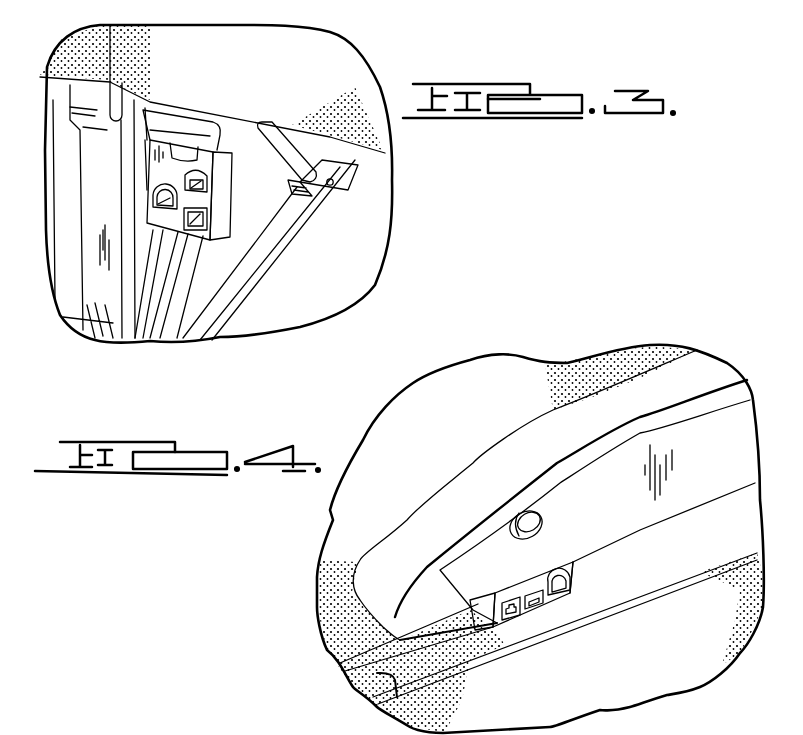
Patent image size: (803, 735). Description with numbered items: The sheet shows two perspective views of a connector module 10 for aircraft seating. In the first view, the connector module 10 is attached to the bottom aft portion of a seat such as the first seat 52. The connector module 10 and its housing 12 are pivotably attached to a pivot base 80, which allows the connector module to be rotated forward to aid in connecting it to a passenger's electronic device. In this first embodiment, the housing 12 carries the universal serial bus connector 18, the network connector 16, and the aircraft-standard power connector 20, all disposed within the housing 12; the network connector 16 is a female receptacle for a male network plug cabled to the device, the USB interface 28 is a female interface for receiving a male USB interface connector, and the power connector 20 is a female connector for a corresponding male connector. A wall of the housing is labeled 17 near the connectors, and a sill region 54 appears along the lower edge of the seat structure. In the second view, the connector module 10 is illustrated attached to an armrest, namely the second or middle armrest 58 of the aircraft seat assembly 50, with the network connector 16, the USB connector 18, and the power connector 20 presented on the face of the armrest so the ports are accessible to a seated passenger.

In FIG. 3, the connector module 10 is at (234, 234).
In FIG. 4, the connector module 10 is at (585, 568).
In FIG. 4, the housing 12 is at (505, 627).
In FIG. 3, the RJ-45 network connector 16 is at (207, 214).
In FIG. 4, the RJ-45 network connector 16 is at (530, 610).
In FIG. 3, the housing wall 17 is at (147, 152).
In FIG. 3, the universal serial bus connector 18 is at (205, 181).
In FIG. 3, the ARINC 628 power connector 20 is at (153, 193).
In FIG. 4, the ARINC 628 power connector 20 is at (577, 584).
In FIG. 4, the USB interface 28 is at (543, 610).
In FIG. 4, the aircraft seat assembly 50 is at (549, 355).
In FIG. 3, the first seat 52 is at (333, 68).
In FIG. 4, the first seat 52 is at (337, 725).
In FIG. 4, the door sill 54 is at (132, 725).
In FIG. 4, the second (middle) armrest 58 is at (447, 487).
In FIG. 3, the pivot base 80 is at (145, 105).